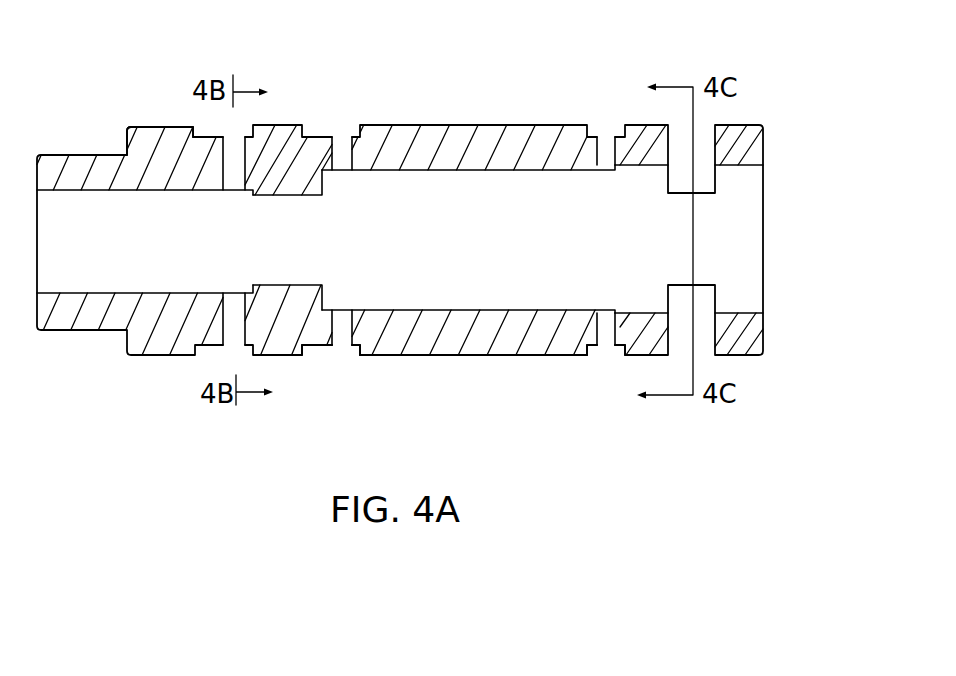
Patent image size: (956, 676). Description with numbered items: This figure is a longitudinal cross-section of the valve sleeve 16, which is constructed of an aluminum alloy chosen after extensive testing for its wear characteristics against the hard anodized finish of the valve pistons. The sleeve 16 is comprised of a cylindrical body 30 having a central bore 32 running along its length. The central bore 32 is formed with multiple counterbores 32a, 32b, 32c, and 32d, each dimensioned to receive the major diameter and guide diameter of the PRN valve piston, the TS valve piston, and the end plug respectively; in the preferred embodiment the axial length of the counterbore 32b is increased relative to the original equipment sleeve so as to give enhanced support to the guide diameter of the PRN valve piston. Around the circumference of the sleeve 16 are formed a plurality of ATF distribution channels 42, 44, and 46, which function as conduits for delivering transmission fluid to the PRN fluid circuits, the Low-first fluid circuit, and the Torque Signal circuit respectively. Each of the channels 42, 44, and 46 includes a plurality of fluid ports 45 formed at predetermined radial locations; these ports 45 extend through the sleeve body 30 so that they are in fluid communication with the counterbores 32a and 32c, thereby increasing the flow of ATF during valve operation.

The valve sleeve 16 is at (457, 117).
The ATF distribution channel 42 is at (205, 135).
The central bore 32 is at (747, 238).
The counterbore 32a is at (70, 192).
The counterbore 32b is at (263, 195).
The counterbore 32c is at (397, 172).
The counterbore 32d is at (628, 167).
The fluid ports 45 is at (232, 177).
The ATF distribution channel 44 is at (318, 352).
The ATF distribution channel 46 is at (592, 352).
The cylindrical body 30 is at (445, 352).